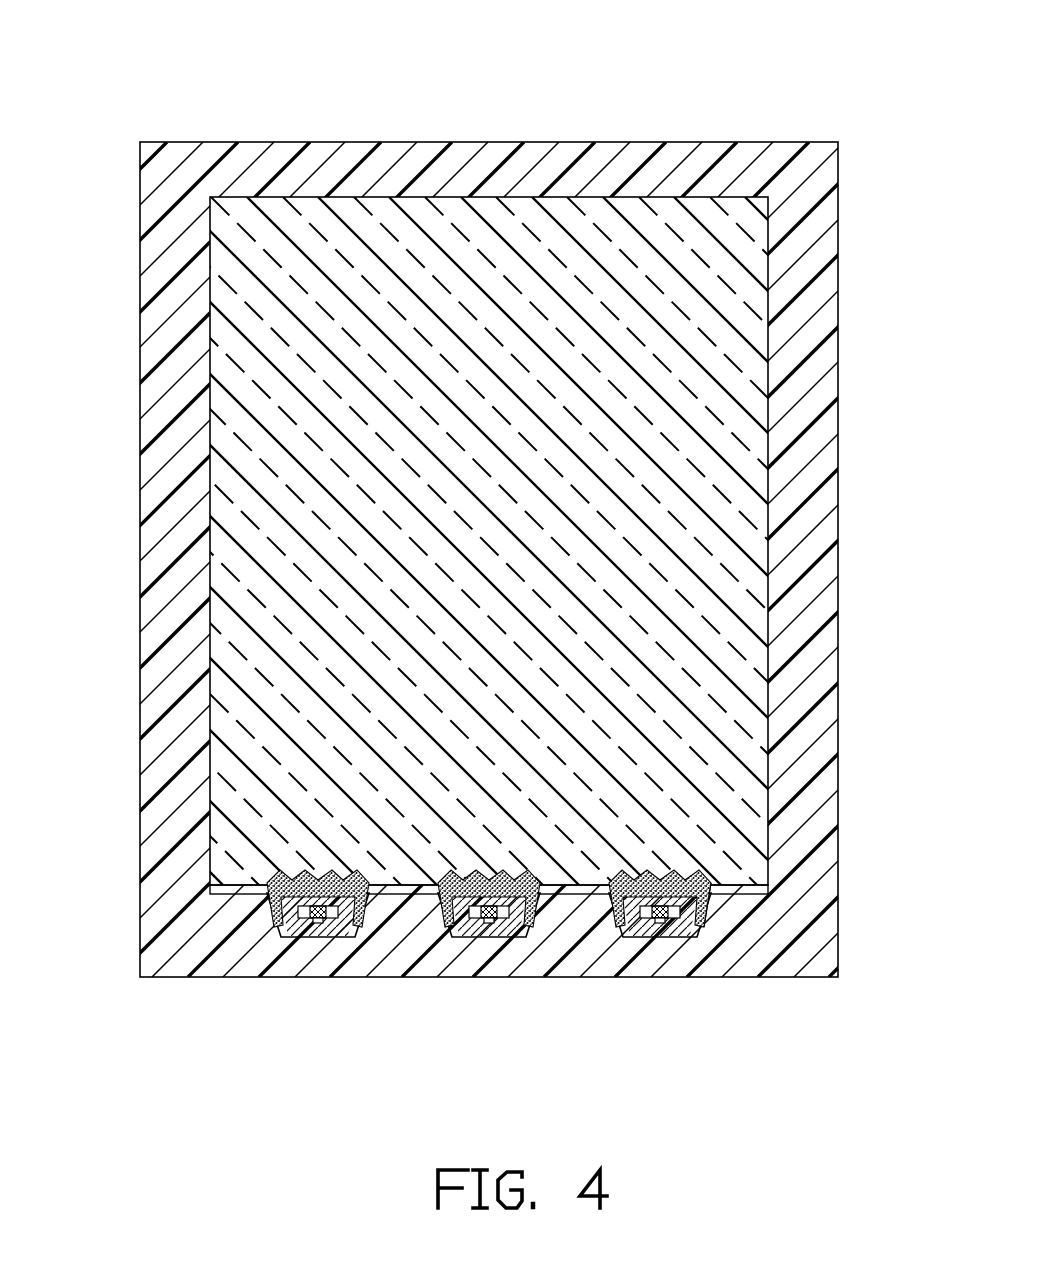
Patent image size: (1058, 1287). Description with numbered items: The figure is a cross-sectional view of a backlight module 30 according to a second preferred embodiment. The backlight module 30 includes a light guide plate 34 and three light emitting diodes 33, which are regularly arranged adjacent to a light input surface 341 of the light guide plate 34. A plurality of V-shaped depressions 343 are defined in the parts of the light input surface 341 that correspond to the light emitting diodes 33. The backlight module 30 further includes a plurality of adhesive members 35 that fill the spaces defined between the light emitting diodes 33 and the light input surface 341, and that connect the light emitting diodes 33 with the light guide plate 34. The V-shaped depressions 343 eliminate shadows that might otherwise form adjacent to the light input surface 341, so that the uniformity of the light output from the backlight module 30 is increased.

The backlight module 30 is at (486, 49).
The light emitting diodes 33 is at (448, 927).
The light guide plate 34 is at (620, 552).
The light input surface 341 is at (752, 893).
The V-shaped depressions 343 is at (312, 868).
The adhesive members 35 is at (707, 899).